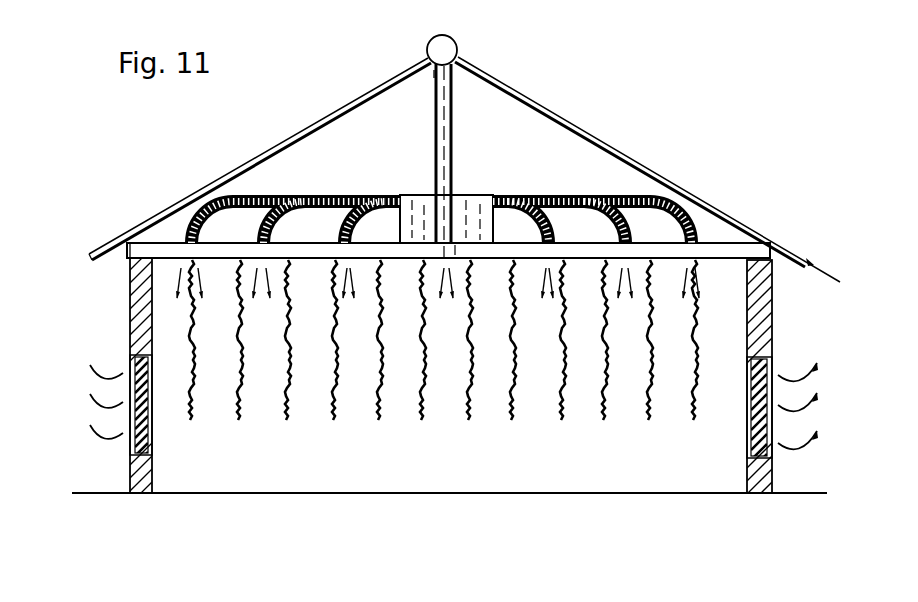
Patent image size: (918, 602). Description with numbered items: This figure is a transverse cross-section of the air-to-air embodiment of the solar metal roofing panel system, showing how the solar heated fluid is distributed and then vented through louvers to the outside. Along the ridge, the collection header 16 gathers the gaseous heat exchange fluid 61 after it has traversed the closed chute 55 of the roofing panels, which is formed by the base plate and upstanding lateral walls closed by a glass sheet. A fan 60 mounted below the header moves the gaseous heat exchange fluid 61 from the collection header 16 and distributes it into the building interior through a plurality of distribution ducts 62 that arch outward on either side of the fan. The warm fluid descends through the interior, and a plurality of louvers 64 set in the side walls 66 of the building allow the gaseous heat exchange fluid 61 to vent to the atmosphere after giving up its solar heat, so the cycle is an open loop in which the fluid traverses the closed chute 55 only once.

The collection header 16 is at (470, 130).
The closed chute 55 is at (684, 184).
The fan 60 is at (458, 200).
The gaseous heat exchange fluid 61 is at (263, 200).
The distribution ducts 62 is at (598, 200).
The louvers 64 is at (135, 362).
The side walls 66 is at (135, 312).